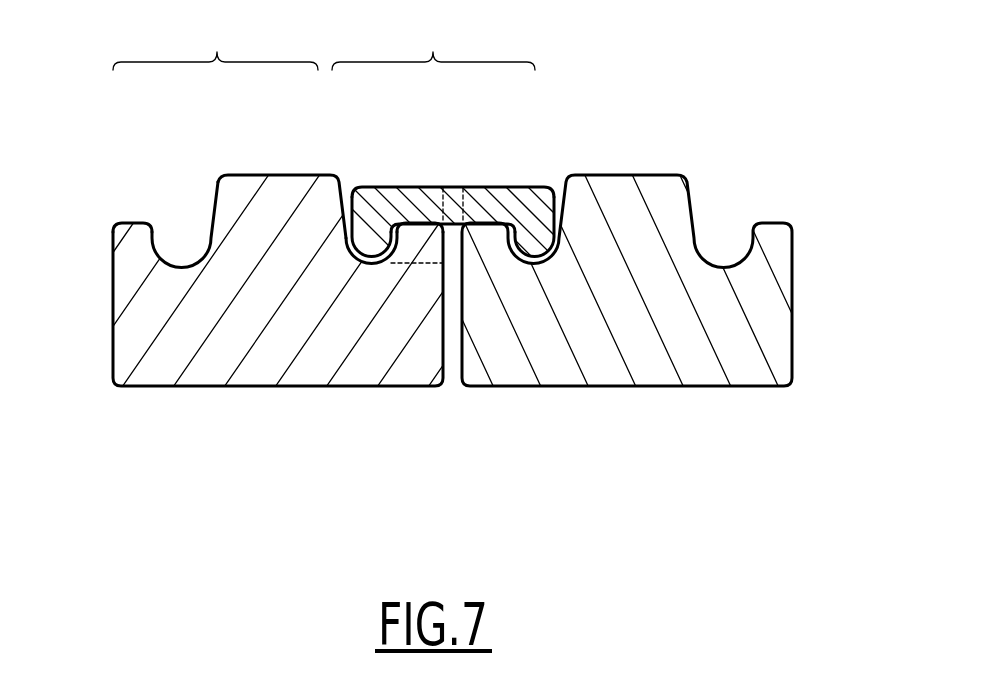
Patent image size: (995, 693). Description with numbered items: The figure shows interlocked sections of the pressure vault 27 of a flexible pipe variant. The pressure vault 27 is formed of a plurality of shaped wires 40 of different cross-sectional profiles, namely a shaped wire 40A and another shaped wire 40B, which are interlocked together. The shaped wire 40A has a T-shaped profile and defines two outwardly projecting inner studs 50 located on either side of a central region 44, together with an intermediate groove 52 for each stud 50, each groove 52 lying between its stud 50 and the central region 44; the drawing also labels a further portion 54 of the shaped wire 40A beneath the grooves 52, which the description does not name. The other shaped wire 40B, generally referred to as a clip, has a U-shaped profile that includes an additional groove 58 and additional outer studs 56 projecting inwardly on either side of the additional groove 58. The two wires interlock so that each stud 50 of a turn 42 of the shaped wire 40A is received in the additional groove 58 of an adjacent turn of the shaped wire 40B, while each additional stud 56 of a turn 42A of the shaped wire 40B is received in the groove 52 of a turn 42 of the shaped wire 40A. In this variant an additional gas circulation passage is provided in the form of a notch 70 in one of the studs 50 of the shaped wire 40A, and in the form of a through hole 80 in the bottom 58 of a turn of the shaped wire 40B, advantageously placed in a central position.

The pressure vault 27 is at (722, 62).
The shaped wires 40 is at (845, 210).
The shaped wire 40A is at (250, 387).
The shaped wire 40B is at (476, 212).
The turn 42 is at (215, 42).
The turn 42A is at (433, 42).
The central region 44 is at (258, 210).
The inner stud 50 is at (130, 240).
The intermediate groove 52 is at (182, 240).
The groove floor 54 is at (187, 288).
The additional outer stud 56 is at (371, 247).
The additional groove 58 is at (473, 213).
The notch 70 is at (420, 237).
The through hole 80 is at (453, 183).